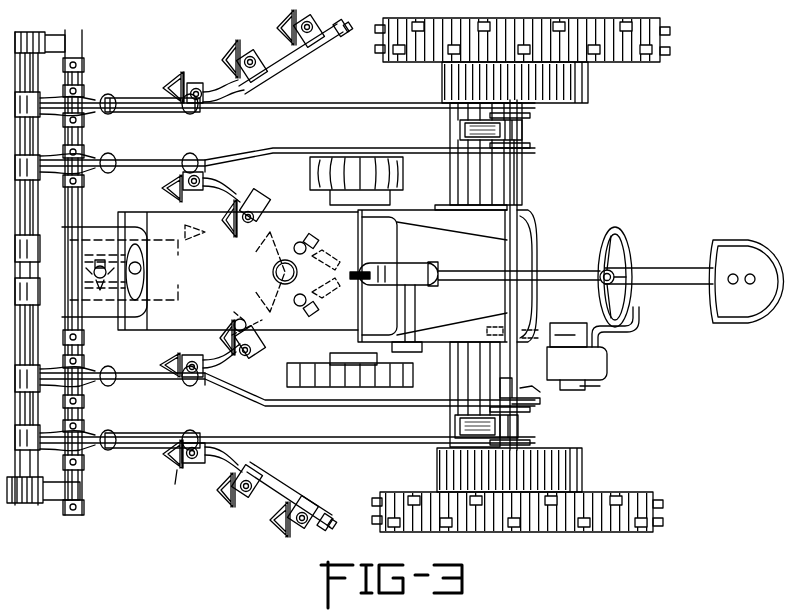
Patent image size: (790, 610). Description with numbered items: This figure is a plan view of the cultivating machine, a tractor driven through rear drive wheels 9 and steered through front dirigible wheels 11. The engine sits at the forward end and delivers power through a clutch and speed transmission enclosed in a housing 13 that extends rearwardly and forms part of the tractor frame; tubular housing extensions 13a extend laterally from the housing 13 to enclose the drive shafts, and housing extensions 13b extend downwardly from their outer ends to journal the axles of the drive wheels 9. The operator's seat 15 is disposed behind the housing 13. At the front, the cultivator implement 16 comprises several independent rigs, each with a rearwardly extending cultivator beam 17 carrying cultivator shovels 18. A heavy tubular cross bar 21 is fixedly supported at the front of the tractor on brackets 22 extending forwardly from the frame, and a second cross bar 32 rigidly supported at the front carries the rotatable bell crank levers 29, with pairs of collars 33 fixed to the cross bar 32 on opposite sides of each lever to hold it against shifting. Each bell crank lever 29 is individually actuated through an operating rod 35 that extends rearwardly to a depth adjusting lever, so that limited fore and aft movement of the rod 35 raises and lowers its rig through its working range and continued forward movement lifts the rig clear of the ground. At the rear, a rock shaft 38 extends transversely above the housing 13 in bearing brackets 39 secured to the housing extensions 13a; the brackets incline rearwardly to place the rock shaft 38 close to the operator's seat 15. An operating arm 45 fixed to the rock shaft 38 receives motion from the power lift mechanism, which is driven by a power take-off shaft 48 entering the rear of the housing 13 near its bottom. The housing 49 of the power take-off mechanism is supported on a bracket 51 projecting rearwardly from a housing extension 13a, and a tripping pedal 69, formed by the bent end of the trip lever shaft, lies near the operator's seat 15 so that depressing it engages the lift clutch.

The rear drive wheels 9 is at (665, 43).
The front dirigible wheels 11 is at (50, 233).
The housing 13 is at (523, 223).
The tubular housing extensions 13a is at (482, 182).
The housing extensions 13b is at (590, 89).
The operator's seat 15 is at (747, 240).
The cultivator implement 16 is at (154, 90).
The cultivator beam 17 is at (287, 68).
The cultivator shovels 18 is at (218, 497).
The tubular cross bar 21 is at (32, 228).
The brackets 22 is at (53, 503).
The bell crank lever 29 is at (83, 97).
The cross bar 32 is at (80, 140).
The collars 33 is at (80, 417).
The operating rod 35 is at (348, 148).
The rock shaft 38 is at (518, 253).
The bearing brackets 39 is at (527, 128).
The operating arm 45 is at (500, 388).
The power take-off shaft 48 is at (500, 323).
The housing 49 is at (608, 365).
The bracket 51 is at (528, 357).
The tripping pedal 69 is at (640, 328).